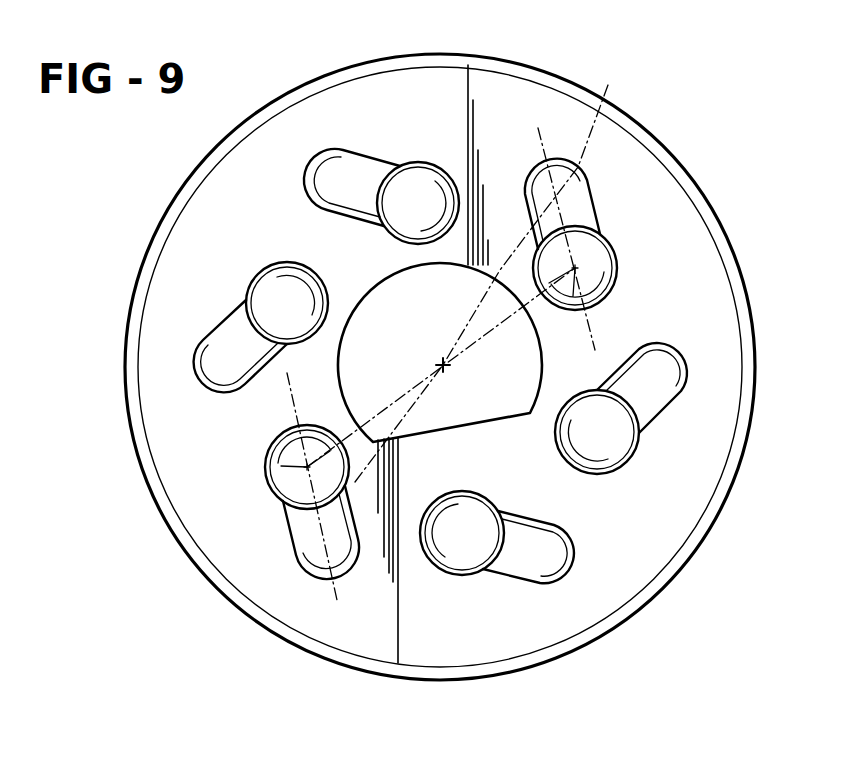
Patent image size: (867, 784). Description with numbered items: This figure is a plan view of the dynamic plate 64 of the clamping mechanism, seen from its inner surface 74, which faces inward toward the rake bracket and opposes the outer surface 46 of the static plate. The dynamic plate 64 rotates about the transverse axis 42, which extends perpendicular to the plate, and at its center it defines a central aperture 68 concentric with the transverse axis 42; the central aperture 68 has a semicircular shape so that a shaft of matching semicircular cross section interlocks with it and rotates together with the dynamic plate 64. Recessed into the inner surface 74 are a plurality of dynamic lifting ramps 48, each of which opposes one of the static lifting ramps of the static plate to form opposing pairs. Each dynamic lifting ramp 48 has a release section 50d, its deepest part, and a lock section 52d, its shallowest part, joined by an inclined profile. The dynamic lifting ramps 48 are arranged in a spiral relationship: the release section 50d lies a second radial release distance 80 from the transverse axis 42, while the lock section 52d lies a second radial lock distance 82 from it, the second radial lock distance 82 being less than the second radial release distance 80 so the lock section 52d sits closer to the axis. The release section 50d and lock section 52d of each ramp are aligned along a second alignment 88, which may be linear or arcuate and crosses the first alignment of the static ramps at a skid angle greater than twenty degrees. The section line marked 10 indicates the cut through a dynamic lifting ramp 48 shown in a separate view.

The section line 10 is at (770, 270).
The transverse axis 42 is at (443, 362).
The outer surface 46 is at (330, 607).
The dynamic lifting ramps 48 is at (596, 198).
The release section 50d is at (590, 267).
The lock section 52d is at (608, 85).
The dynamic plate 64 is at (581, 86).
The central aperture 68 is at (514, 413).
The inner surface 74 is at (254, 225).
The second radial release distance 80 is at (371, 413).
The second radial lock distance 82 is at (512, 258).
The second alignment 88 is at (606, 346).